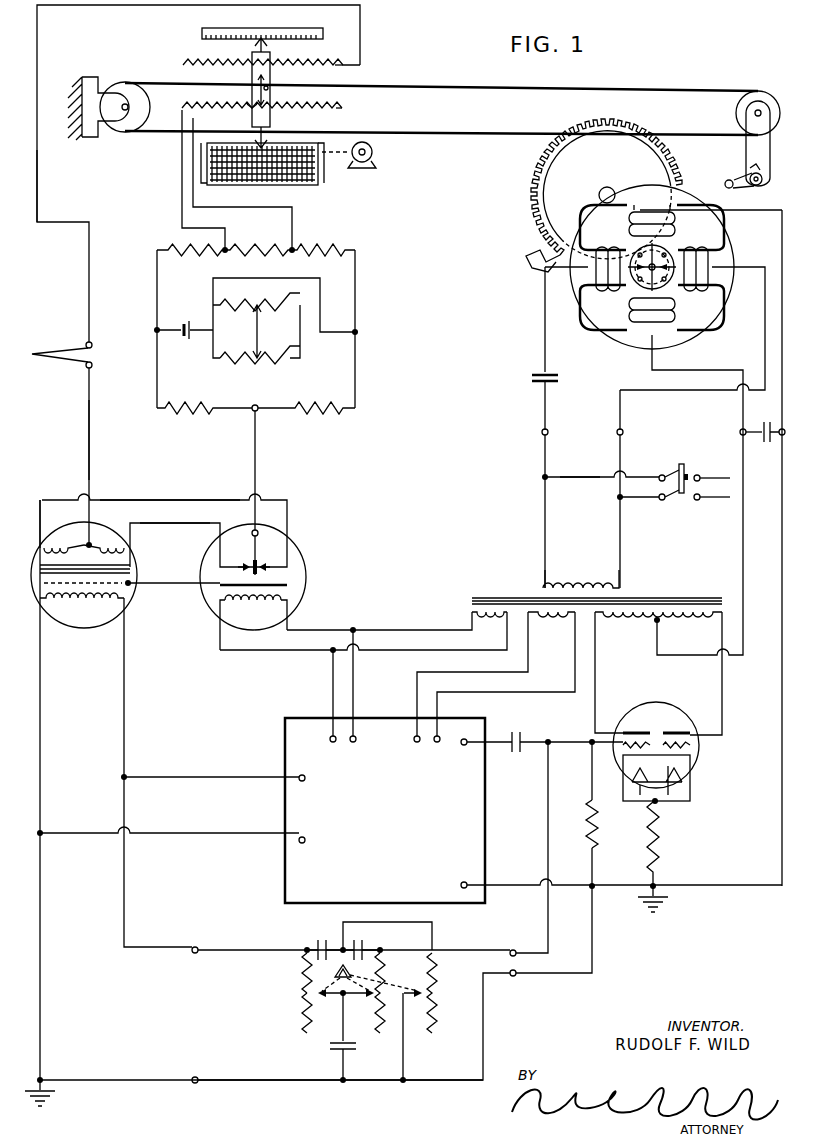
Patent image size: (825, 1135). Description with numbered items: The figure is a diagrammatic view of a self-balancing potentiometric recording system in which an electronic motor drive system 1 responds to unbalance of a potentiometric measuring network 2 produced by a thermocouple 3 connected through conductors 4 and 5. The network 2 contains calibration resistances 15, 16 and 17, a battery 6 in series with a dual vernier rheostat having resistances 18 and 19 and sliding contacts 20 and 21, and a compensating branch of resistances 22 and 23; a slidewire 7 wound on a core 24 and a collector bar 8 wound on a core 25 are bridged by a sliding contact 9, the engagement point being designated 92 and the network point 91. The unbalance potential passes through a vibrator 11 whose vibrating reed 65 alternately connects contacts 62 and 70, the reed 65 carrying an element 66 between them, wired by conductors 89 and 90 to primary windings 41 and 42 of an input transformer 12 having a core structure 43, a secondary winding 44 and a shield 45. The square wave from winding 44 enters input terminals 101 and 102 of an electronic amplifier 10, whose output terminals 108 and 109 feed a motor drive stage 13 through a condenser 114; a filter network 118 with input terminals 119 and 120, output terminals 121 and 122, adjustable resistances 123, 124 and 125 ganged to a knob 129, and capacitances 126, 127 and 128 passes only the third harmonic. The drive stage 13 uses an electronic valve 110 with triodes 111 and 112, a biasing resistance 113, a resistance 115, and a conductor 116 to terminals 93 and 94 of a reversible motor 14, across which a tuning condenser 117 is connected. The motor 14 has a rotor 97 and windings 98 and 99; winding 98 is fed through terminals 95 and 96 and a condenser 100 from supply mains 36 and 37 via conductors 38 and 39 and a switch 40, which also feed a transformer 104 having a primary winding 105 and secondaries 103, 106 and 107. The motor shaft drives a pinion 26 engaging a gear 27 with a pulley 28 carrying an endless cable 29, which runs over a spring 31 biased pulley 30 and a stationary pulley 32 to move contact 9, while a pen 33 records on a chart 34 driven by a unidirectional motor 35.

The electronic motor drive system 1 is at (388, 590).
The potentiometric measuring network 2 is at (297, 359).
The thermocouple 3 is at (59, 347).
The conductor 4 is at (90, 443).
The conductor 5 is at (38, 183).
The battery 6 is at (183, 326).
The slidewire resistance 7 is at (333, 103).
The collector bar 8 is at (214, 62).
The sliding contact 9 is at (272, 98).
The electronic amplifier 10 is at (364, 807).
The vibrator 11 is at (252, 578).
The input transformer 12 is at (125, 579).
The motor drive stage 13 is at (663, 748).
The reversible electrical motor 14 is at (667, 267).
The resistance 15 is at (182, 246).
The resistance 16 is at (262, 244).
The resistance 17 is at (324, 244).
The resistance 18 is at (276, 304).
The resistance 19 is at (268, 365).
The sliding contact 20 is at (254, 312).
The sliding contact 21 is at (259, 352).
The resistance 22 is at (196, 416).
The resistance 23 is at (312, 418).
The core 24 is at (332, 120).
The core 25 is at (334, 78).
The pinion 26 is at (603, 227).
The gear 27 is at (532, 180).
The pulley 28 is at (554, 167).
The endless cable 29 is at (470, 86).
The pulley 30 is at (768, 91).
The spring 31 is at (737, 177).
The stationary pulley 32 is at (126, 85).
The pen 33 is at (262, 164).
The recorder chart 34 is at (320, 173).
The unidirectional motor 35 is at (375, 152).
The alternating current supply main 36 is at (700, 476).
The alternating current supply main 37 is at (702, 498).
The conductor 38 is at (575, 477).
The conductor 39 is at (654, 497).
The double pole-single throw switch 40 is at (661, 476).
The primary winding 41 is at (66, 532).
The primary winding 42 is at (92, 533).
The core structure 43 is at (40, 547).
The secondary winding 44 is at (84, 604).
The shield 45 is at (130, 586).
The contact 62 is at (262, 571).
The vibrating reed 65 is at (250, 532).
The electrode 66 is at (257, 562).
The contact 70 is at (249, 562).
The conductor 89 is at (175, 500).
The conductor 90 is at (162, 524).
The potentiometric network point 91 is at (254, 404).
The point of engagement 92 is at (252, 105).
The motor terminal 93 is at (781, 428).
The motor terminal 94 is at (741, 432).
The motor terminal 95 is at (618, 432).
The motor terminal 96 is at (543, 432).
The rotor 97 is at (603, 307).
The winding 98 is at (700, 227).
The winding 99 is at (700, 307).
The condenser 100 is at (529, 374).
The input terminal 101 is at (306, 779).
The input terminal 102 is at (306, 841).
The high voltage secondary winding 103 is at (564, 620).
The transformer 104 is at (512, 596).
The line voltage primary winding 105 is at (590, 582).
The low voltage secondary winding 106 is at (498, 620).
The high voltage secondary winding 107 is at (646, 624).
The output terminal 108 is at (460, 746).
The output terminal 109 is at (460, 882).
The electronic valve 110 is at (696, 762).
The triode 111 is at (627, 727).
The triode 112 is at (692, 726).
The biasing resistance 113 is at (660, 838).
The condenser 114 is at (516, 732).
The resistance 115 is at (600, 822).
The conductor 116 is at (780, 830).
The tuning condenser 117 is at (765, 442).
The filter network 118 is at (337, 994).
The input terminal 119 is at (508, 950).
The input terminal 120 is at (516, 976).
The output terminal 121 is at (193, 950).
The output terminal 122 is at (194, 1076).
The adjustable resistance 123 is at (438, 970).
The adjustable resistance 124 is at (382, 962).
The adjustable resistance 125 is at (300, 990).
The capacitance 126 is at (350, 945).
The capacitance 127 is at (320, 936).
The capacitance 128 is at (284, 1009).
The knob 129 is at (300, 958).